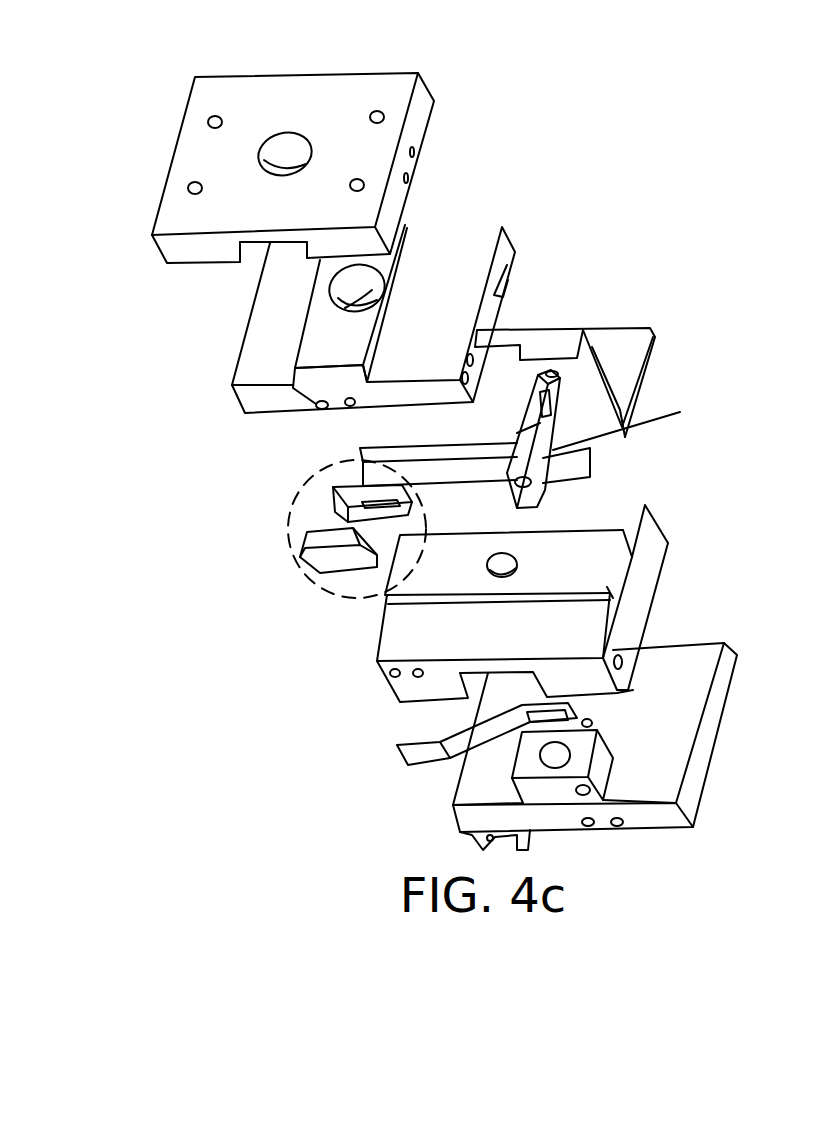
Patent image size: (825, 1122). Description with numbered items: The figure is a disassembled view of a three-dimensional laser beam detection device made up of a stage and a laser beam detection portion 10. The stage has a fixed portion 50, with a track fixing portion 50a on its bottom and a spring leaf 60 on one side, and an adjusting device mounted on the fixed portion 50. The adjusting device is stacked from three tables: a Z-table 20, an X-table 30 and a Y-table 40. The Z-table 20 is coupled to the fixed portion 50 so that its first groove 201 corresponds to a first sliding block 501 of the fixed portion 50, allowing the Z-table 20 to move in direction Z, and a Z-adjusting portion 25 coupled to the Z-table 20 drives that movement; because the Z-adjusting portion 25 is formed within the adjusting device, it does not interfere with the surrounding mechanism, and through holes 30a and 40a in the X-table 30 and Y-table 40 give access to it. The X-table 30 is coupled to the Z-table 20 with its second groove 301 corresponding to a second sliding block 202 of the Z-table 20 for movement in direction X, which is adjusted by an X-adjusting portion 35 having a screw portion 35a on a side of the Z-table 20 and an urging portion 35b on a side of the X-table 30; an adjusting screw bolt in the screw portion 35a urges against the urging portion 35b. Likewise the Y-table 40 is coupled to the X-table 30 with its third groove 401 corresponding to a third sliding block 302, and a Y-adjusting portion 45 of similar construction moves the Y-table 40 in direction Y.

The laser beam detection portion 10 is at (655, 358).
The Z-table 20 is at (515, 588).
The first groove 201 is at (462, 662).
The second sliding block 202 is at (590, 567).
The Z-adjusting portion 25 is at (505, 563).
The X-table 30 is at (391, 294).
The through hole 30a is at (360, 290).
The second groove 301 is at (500, 285).
The third sliding block 302 is at (320, 382).
The X-adjusting portion 35 is at (304, 520).
The screw portion 35a is at (312, 560).
The urging portion 35b is at (333, 496).
The Y-table 40 is at (313, 145).
The through hole 40a is at (292, 152).
The third groove 401 is at (240, 260).
The Y-adjusting portion 45 is at (555, 455).
The fixed portion 50 is at (553, 762).
The track fixing portion 50a is at (488, 840).
The first sliding block 501 is at (600, 770).
The spring leaf 60 is at (400, 745).